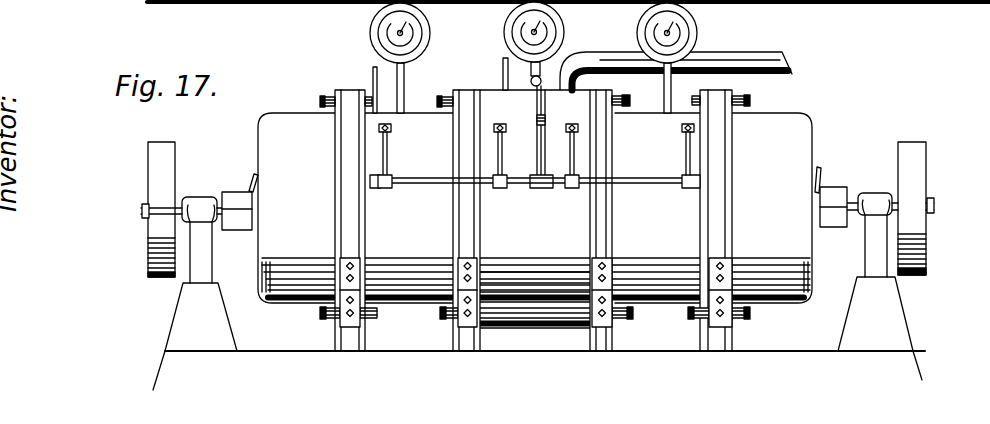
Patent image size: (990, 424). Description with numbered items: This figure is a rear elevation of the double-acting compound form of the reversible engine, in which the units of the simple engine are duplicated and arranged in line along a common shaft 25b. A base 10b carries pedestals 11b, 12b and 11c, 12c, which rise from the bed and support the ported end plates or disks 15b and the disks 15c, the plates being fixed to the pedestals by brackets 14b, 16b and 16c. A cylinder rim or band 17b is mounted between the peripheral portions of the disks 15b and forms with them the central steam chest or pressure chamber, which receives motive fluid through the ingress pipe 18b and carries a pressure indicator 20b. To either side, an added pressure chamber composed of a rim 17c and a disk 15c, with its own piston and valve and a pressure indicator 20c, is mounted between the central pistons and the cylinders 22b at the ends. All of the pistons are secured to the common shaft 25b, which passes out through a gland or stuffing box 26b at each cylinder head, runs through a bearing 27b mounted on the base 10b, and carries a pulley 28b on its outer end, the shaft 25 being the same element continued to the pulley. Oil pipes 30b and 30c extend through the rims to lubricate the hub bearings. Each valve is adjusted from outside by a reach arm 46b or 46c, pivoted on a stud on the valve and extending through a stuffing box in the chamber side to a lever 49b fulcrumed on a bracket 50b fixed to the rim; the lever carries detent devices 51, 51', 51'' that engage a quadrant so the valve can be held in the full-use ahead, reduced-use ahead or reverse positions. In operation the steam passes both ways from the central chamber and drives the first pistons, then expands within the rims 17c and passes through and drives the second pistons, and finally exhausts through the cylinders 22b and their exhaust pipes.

The base 10b is at (539, 334).
The pedestal 11b is at (473, 340).
The pedestal 11c is at (357, 339).
The pedestal 12b is at (607, 338).
The pedestal 12c is at (727, 338).
The bracket 14b is at (593, 262).
The end plate or disk 15b is at (623, 136).
The disk 15c is at (760, 248).
The bracket 16b is at (478, 263).
The bracket 16c is at (344, 268).
The cylinder rim or band 17b is at (538, 233).
The rim 17c is at (544, 220).
The ingress pipe 18b is at (740, 62).
The pressure indicator 20b is at (504, 30).
The pressure indicator 20c is at (642, 25).
The cylinder 22b is at (535, 209).
The shaft 25 is at (934, 206).
The common shaft 25b is at (142, 212).
The gland or stuffing box 26b is at (838, 176).
The bearing 27b is at (193, 207).
The pulley 28b is at (933, 152).
The oil-pipe 30b is at (503, 68).
The oil-pipe 30c is at (373, 70).
The reach arm 46b is at (503, 128).
The reach arm 46c is at (387, 128).
The lever 49b is at (541, 107).
The bracket 50b is at (376, 189).
The detent devices 51 is at (561, 156).
The detent devices 51' is at (539, 155).
The detent devices 51'' is at (647, 198).